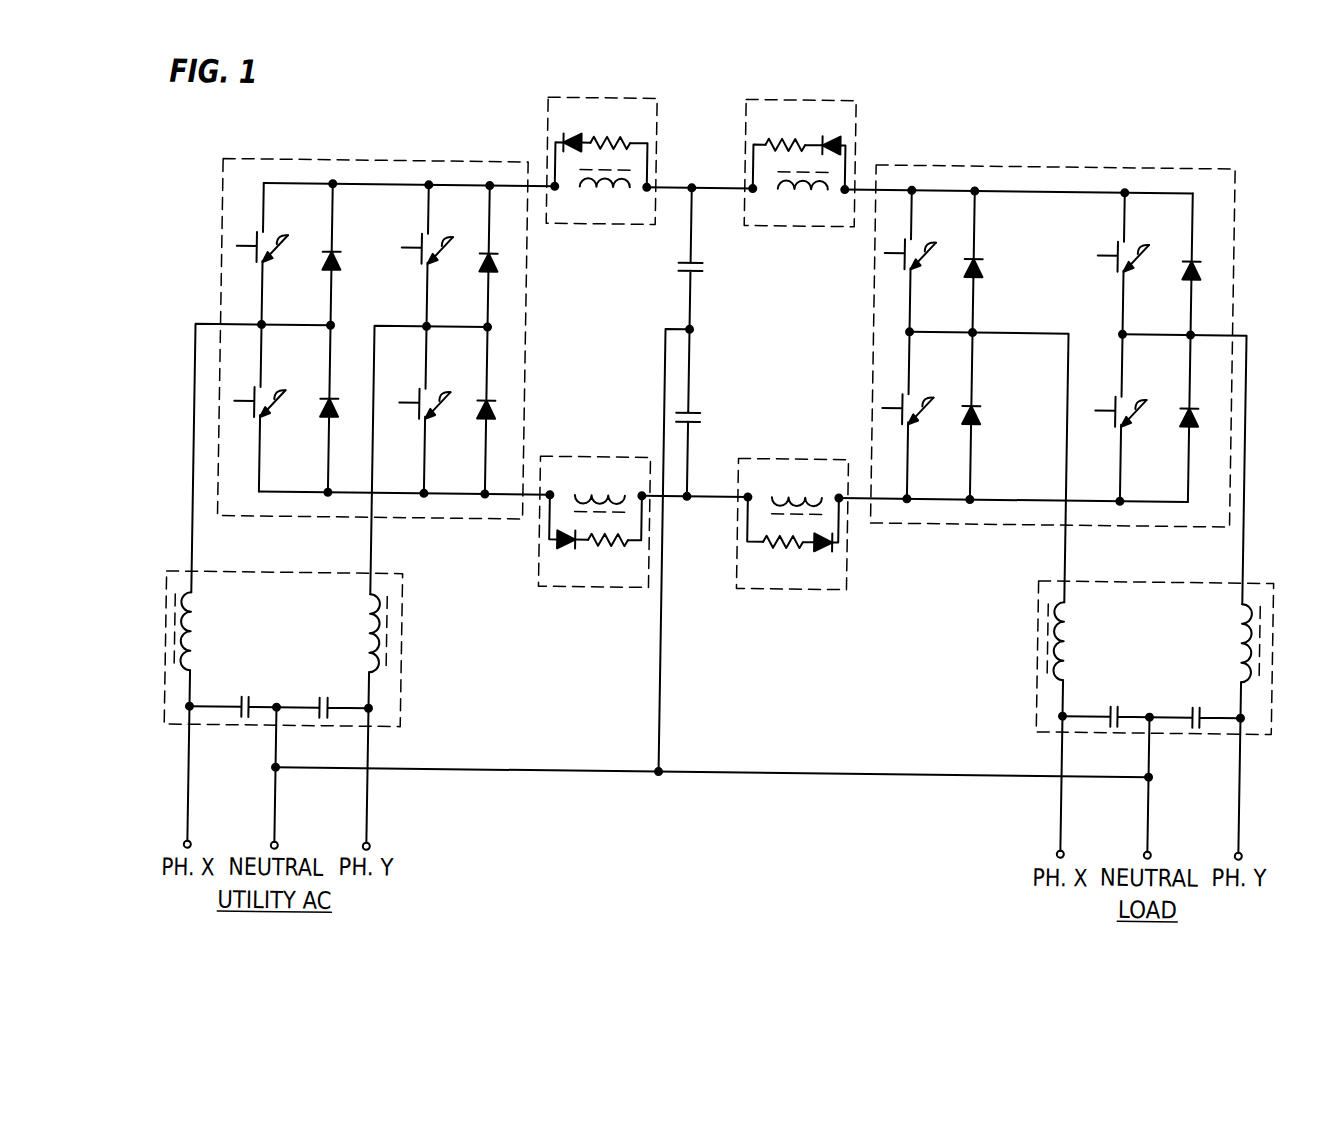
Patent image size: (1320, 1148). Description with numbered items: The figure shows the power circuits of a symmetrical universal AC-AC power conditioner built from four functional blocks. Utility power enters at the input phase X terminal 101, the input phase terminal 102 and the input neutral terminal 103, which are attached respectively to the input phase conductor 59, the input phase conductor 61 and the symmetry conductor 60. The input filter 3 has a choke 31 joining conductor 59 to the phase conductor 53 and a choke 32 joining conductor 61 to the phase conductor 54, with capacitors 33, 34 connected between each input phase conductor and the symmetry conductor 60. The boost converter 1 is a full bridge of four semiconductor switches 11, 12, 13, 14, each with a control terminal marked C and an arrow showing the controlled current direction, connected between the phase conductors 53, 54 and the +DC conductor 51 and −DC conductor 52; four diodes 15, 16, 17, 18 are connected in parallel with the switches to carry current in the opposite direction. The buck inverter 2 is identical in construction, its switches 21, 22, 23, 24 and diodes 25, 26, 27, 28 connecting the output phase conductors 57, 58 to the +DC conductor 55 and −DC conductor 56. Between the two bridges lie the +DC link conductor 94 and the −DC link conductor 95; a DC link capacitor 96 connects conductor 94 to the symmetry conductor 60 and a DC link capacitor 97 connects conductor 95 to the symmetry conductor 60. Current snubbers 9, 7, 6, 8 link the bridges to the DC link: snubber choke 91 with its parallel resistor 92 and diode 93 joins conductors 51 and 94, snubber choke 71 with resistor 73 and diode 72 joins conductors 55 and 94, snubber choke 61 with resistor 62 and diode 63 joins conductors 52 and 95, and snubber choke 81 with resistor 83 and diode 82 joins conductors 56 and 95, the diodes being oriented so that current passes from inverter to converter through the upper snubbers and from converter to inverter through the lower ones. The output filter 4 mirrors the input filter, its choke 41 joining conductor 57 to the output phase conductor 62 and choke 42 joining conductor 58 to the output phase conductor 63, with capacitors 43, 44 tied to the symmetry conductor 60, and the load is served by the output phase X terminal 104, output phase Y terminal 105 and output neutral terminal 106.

The boost converter 1 is at (273, 160).
The buck inverter 2 is at (990, 164).
The input filter 3 is at (251, 572).
The output filter 4 is at (1121, 569).
The current snubber 6 is at (584, 453).
The current snubber 7 is at (764, 92).
The current snubber 8 is at (784, 451).
The current snubber 9 is at (570, 92).
The semiconductor switch 11 is at (262, 254).
The semiconductor switch 12 is at (259, 406).
The semiconductor switch 13 is at (427, 255).
The semiconductor switch 14 is at (424, 407).
The diode 15 is at (333, 262).
The diode 16 is at (333, 409).
The diode 17 is at (490, 262).
The diode 18 is at (490, 409).
The semiconductor switch 21 is at (910, 261).
The semiconductor switch 22 is at (907, 413).
The semiconductor switch 23 is at (1124, 263).
The semiconductor switch 24 is at (1121, 415).
The diode 25 is at (975, 262).
The diode 26 is at (975, 409).
The diode 27 is at (1193, 262).
The diode 28 is at (1193, 409).
The choke 31 is at (209, 641).
The choke 32 is at (357, 645).
The capacitor 33 is at (246, 702).
The capacitor 34 is at (324, 701).
The choke 41 is at (1083, 637).
The choke 42 is at (1245, 626).
The capacitor 43 is at (1111, 702).
The capacitor 44 is at (1193, 702).
The +DC conductor 51 is at (533, 186).
The −DC conductor 52 is at (530, 500).
The phase conductor 53 is at (194, 550).
The phase conductor 54 is at (372, 550).
The +DC conductor 55 is at (861, 186).
The −DC conductor 56 is at (868, 501).
The output phase conductor 57 is at (1066, 550).
The output phase conductor 58 is at (1244, 548).
The input phase conductor 59 is at (193, 750).
The symmetry conductor 60 is at (498, 777).
The snubber choke / input phase conductor 61 is at (600, 491).
The resistor / output phase conductor 62 is at (608, 552).
The diode / output phase conductor 63 is at (563, 551).
The snubber choke 71 is at (796, 192).
The diode 72 is at (825, 143).
The resistor 73 is at (774, 143).
The snubber choke 81 is at (800, 489).
The diode 82 is at (819, 550).
The resistor 83 is at (779, 550).
The snubber choke 91 is at (598, 191).
The resistor 92 is at (612, 143).
The diode 93 is at (562, 143).
The +DC link conductor 94 is at (686, 184).
The −DC link conductor 95 is at (690, 500).
The DC link capacitor 96 is at (697, 266).
The DC link capacitor 97 is at (697, 416).
The input phase X terminal 101 is at (189, 850).
The input phase terminal 102 is at (368, 850).
The input neutral terminal 103 is at (276, 850).
The output phase X terminal 104 is at (1062, 850).
The output phase Y terminal 105 is at (1240, 850).
The output neutral terminal 106 is at (1149, 850).